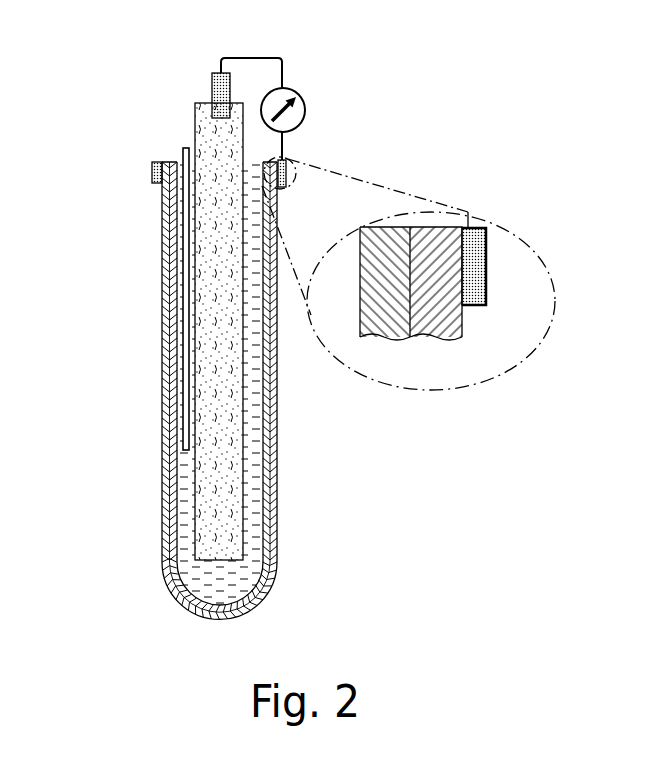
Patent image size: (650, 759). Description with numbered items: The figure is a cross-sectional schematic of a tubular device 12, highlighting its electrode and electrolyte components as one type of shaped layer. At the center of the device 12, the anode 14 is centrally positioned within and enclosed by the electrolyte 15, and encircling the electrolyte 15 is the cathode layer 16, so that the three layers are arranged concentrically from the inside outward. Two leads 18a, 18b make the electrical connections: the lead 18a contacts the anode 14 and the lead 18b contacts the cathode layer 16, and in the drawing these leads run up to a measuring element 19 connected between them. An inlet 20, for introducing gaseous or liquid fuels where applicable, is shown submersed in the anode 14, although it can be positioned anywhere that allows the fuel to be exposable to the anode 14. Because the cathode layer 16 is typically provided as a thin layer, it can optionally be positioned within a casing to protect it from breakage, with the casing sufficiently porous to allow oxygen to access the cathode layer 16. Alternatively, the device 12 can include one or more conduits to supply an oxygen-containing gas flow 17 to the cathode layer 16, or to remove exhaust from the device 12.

The tubular device 12 is at (104, 80).
The anode 14 is at (245, 583).
The electrolyte 15 is at (390, 339).
The cathode layer 16 is at (438, 340).
The oxygen-containing gas flow 17 is at (139, 296).
The lead 18a is at (212, 84).
The lead 18b is at (487, 263).
The measuring instrument 19 is at (286, 60).
The inlet 20 is at (173, 145).